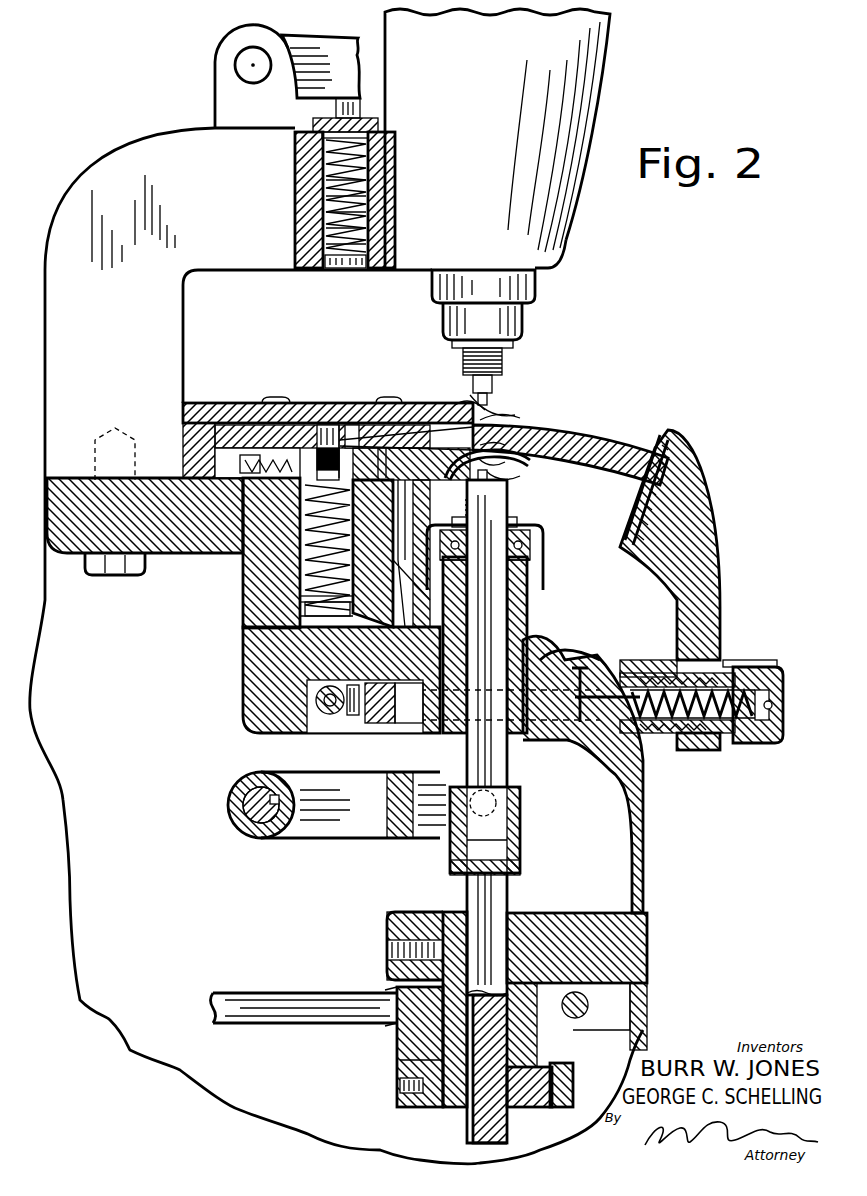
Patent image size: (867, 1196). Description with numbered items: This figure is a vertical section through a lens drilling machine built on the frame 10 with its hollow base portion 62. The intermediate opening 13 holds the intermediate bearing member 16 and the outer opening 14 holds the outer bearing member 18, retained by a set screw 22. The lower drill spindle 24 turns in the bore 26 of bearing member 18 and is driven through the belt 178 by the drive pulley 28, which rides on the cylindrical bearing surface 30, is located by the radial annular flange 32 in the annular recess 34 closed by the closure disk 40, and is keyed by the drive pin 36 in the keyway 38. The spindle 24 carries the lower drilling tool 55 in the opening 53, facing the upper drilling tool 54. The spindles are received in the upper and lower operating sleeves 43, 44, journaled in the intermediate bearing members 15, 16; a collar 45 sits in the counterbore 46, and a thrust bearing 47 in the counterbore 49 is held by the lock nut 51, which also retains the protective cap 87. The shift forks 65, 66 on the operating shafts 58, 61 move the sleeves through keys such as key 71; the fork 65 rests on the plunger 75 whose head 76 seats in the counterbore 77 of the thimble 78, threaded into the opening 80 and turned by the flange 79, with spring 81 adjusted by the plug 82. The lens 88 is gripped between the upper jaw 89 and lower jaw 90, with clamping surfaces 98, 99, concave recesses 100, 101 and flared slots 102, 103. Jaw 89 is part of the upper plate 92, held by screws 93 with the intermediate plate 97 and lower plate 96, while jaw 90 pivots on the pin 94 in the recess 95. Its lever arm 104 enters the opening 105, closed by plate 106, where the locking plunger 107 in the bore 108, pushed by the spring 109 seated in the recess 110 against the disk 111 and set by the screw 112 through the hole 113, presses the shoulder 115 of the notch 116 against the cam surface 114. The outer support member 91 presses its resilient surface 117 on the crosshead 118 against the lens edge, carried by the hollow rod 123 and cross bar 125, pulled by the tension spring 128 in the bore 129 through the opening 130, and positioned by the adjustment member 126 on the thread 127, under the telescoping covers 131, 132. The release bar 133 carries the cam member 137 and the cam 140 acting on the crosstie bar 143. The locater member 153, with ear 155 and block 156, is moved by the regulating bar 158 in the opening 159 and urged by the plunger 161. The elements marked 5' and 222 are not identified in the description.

The frame 10 is at (83, 186).
The upper operating shaft 58 is at (238, 62).
The upper bifurcated shift fork 65 is at (318, 42).
The yieldably mounted plunger 75 is at (362, 100).
The hexagonal flange 79 is at (380, 118).
The plunger retaining thimble 78 is at (385, 131).
The counterbore 77 is at (390, 150).
The enlarged head portion 76 is at (300, 142).
The threaded opening 80 is at (380, 208).
The spring 81 is at (372, 233).
The screw abutment plug 82 is at (338, 268).
The intermediate bearing member 15 is at (510, 268).
The upper operating sleeve 43 is at (528, 300).
The nozzle body 5' is at (509, 314).
The lock nut 51 is at (500, 343).
The upper drilling tool 54 is at (498, 366).
The concave recess 100 is at (498, 404).
The open-ended flared slot 102 is at (470, 398).
The stationary upper jaw 89 is at (456, 411).
The clamping surface 98 is at (505, 421).
The block 156 is at (200, 440).
The downwardly directed ear 155 is at (222, 418).
The screws 93 is at (255, 400).
The intermediate plate 97 is at (279, 398).
The upper plate 92 is at (325, 425).
The clearance hole 113 is at (332, 412).
The guiding recess 95 is at (351, 428).
The pivot pin 94 is at (386, 400).
The locater member 153 is at (395, 427).
The opening 159 is at (183, 445).
The regulating bar 158 is at (195, 486).
The spring actuated plunger 161 is at (225, 480).
The lower plate 96 is at (258, 478).
The adjustment screw 112 is at (290, 478).
The hollow base portion 62 is at (150, 586).
The compression spring 109 is at (300, 562).
The disk 111 is at (300, 510).
The recess 110 is at (310, 577).
The shoulder 115 is at (310, 608).
The cam surface 114 is at (330, 618).
The notch 116 is at (330, 640).
The locking plunger 107 is at (330, 656).
The bore 108 is at (330, 680).
The vertical lever arm 104 is at (380, 565).
The opening 105 is at (418, 528).
The closure plate 106 is at (413, 602).
The movable lower jaw 90 is at (445, 472).
The clamping surface 99 is at (500, 446).
The concave recess 101 is at (500, 466).
The open-ended flared slot 103 is at (512, 482).
The lower drilling tool 55 is at (490, 494).
The ophthalmic lens 88 is at (645, 440).
The outer support member 91 is at (712, 466).
The lens contacting surface 117 is at (642, 494).
The upstanding crosshead 118 is at (710, 598).
The thrust bearing 47 is at (543, 532).
The counterbore 49 is at (543, 549).
The protective cap 87 is at (543, 574).
The opening 53 is at (529, 600).
The intermediate opening 13 is at (540, 642).
The intermediate bearing member 16 is at (527, 622).
The lower operating sleeve 44 is at (527, 748).
The cross bar 125 is at (603, 660).
The telescoping cover 132 is at (583, 670).
The telescoping cover 131 is at (644, 664).
The flange 222 is at (742, 661).
The adjustment member 126 is at (778, 742).
The bore 129 is at (665, 735).
The opening 130 is at (647, 736).
The tension spring 128 is at (690, 716).
The screw thread 127 is at (738, 750).
The hollow rod 123 is at (408, 712).
The release bar 133 is at (312, 725).
The movable cam member 137 is at (328, 714).
The keylike laterally projecting cam 140 is at (353, 716).
The crosstie bar 143 is at (380, 724).
The lower bifurcated shift fork 66 is at (292, 826).
The lower operating shaft 61 is at (240, 826).
The key 71 is at (500, 798).
The counterbore 46 is at (515, 842).
The collar 45 is at (517, 868).
The set screw 22 is at (388, 932).
The outer bearing member 18 is at (516, 923).
The outer opening 14 is at (560, 920).
The annular recess 34 is at (575, 1060).
The closure disk 40 is at (556, 1105).
The bore 26 is at (518, 1106).
The cylindrical bearing surface 30 is at (397, 1060).
The drive pulley 28 is at (392, 1024).
The radial annular flange 32 is at (397, 1082).
The drive pin 36 is at (418, 1094).
The drill spindle 24 is at (507, 1130).
The keyway 38 is at (470, 1143).
The belt 178 is at (280, 1012).